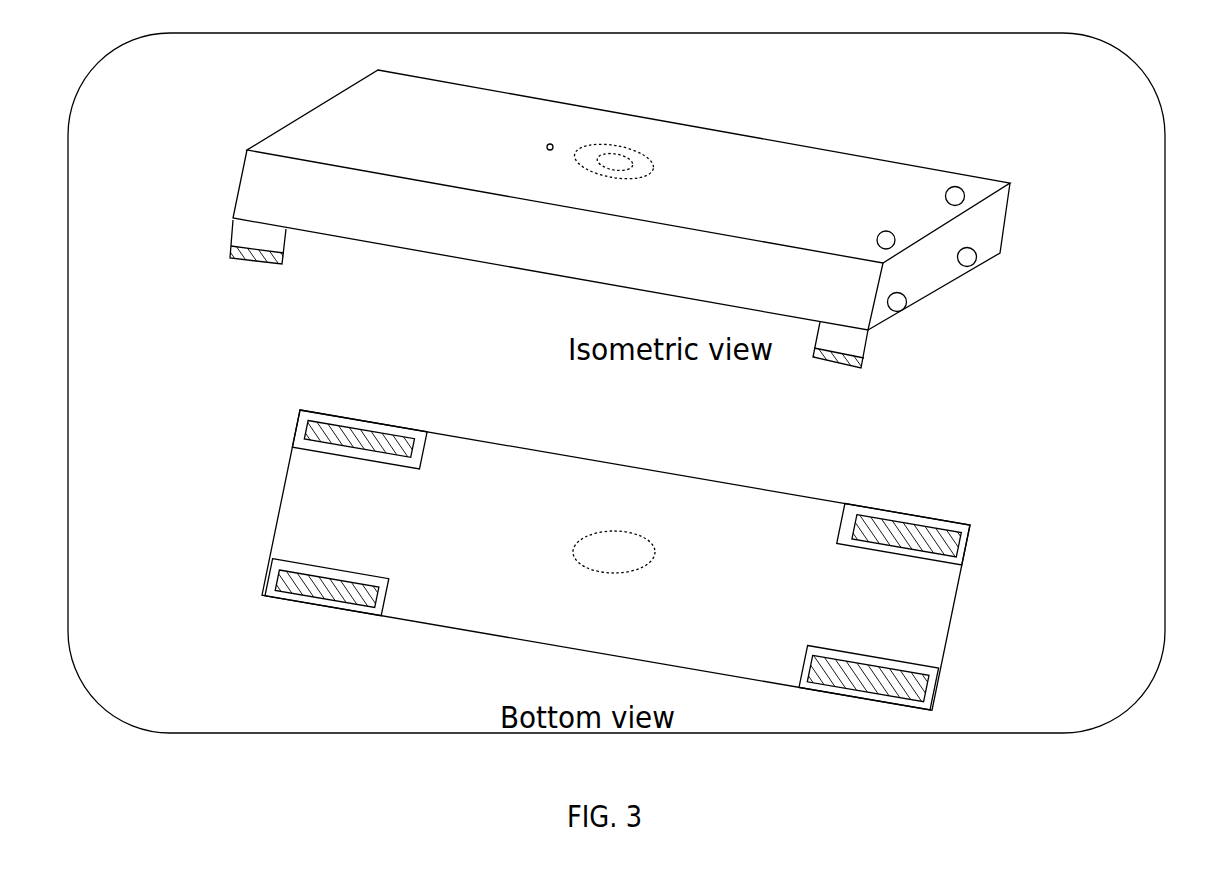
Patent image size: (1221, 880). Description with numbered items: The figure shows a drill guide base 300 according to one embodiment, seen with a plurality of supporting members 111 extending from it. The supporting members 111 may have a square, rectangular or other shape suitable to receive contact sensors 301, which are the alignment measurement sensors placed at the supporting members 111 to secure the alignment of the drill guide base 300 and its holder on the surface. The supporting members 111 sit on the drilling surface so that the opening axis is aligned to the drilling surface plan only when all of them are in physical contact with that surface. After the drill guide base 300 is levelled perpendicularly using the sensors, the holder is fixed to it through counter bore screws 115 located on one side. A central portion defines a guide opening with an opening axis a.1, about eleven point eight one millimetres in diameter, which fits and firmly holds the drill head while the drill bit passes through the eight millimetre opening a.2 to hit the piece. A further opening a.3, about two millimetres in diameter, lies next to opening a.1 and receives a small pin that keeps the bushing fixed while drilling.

The drill guide base 300 is at (1085, 72).
The counter bore screws 115 is at (967, 257).
The opening axis a.1 is at (655, 167).
The opening a.2 is at (600, 160).
The opening a.3 is at (548, 144).
The supporting members 111 is at (248, 232).
The contact sensors 301 is at (255, 262).